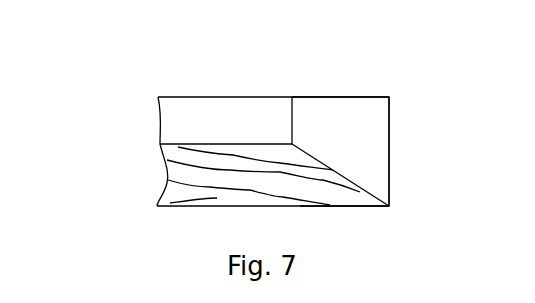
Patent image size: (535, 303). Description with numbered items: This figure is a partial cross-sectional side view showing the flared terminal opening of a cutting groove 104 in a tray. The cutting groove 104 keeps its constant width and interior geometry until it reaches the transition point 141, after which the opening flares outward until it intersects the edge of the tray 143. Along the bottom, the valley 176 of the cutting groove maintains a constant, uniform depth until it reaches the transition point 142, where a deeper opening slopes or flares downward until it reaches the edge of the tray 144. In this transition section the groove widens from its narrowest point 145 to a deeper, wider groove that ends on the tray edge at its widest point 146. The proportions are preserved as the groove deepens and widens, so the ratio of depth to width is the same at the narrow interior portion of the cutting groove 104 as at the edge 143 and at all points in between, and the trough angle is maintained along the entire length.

The cutting groove 104 is at (170, 95).
The transition point 141 is at (292, 97).
The transition point 142 is at (293, 145).
The edge of the tray 143 is at (389, 97).
The edge of the tray 144 is at (390, 200).
The narrowest point 145 is at (288, 125).
The widest point 146 is at (389, 140).
The valley 176 is at (193, 143).